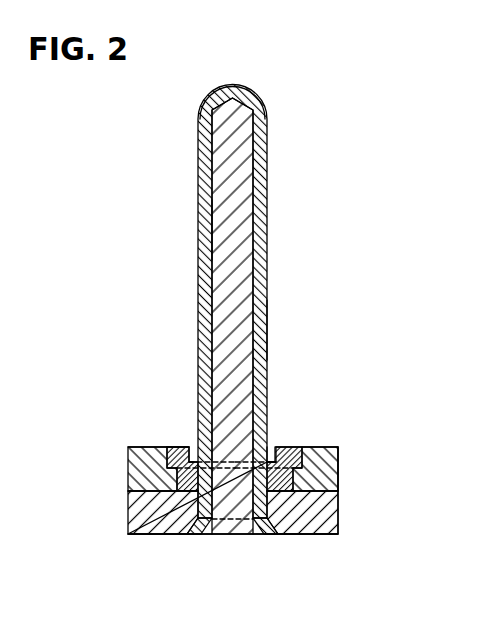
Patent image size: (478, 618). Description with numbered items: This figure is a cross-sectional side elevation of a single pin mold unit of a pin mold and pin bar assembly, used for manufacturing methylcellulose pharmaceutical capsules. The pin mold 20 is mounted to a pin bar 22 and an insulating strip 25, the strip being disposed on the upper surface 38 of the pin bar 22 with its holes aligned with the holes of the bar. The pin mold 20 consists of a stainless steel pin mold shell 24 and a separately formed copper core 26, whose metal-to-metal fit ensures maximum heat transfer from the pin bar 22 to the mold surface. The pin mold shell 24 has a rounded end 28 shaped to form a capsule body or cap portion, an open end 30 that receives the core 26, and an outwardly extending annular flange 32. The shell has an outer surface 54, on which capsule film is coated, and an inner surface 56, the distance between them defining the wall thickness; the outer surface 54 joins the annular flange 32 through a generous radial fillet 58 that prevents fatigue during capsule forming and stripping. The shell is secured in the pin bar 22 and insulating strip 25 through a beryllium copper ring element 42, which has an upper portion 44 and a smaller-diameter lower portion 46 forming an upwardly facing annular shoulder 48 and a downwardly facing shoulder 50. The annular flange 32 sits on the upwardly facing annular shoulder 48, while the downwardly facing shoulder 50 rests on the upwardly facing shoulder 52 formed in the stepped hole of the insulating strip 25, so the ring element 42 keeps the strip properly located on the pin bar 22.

The pin mold 20 is at (302, 95).
The pin bar 22 is at (228, 467).
The pin mold shell 24 is at (267, 187).
The insulating strip 25 is at (128, 456).
The core 26 is at (252, 268).
The rounded end 28 is at (233, 84).
The open end 30 is at (202, 544).
The annular flange 32 is at (195, 460).
The upper surface 38 is at (338, 452).
The ring element 42 is at (178, 438).
The upper portion 44 is at (290, 447).
The lower portion 46 is at (317, 480).
The upwardly facing annular shoulder 48 is at (128, 494).
The downwardly facing shoulder 50 is at (296, 470).
The upwardly facing shoulder 52 is at (151, 467).
The outer surface 54 is at (272, 331).
The inner surface 56 is at (214, 228).
The radial fillet 58 is at (272, 440).